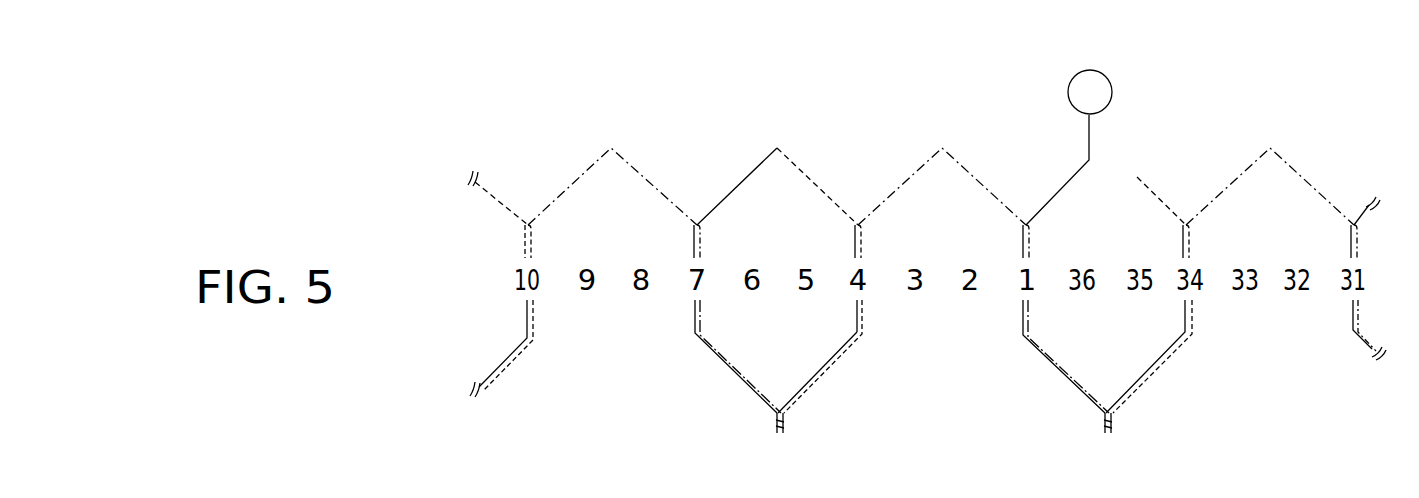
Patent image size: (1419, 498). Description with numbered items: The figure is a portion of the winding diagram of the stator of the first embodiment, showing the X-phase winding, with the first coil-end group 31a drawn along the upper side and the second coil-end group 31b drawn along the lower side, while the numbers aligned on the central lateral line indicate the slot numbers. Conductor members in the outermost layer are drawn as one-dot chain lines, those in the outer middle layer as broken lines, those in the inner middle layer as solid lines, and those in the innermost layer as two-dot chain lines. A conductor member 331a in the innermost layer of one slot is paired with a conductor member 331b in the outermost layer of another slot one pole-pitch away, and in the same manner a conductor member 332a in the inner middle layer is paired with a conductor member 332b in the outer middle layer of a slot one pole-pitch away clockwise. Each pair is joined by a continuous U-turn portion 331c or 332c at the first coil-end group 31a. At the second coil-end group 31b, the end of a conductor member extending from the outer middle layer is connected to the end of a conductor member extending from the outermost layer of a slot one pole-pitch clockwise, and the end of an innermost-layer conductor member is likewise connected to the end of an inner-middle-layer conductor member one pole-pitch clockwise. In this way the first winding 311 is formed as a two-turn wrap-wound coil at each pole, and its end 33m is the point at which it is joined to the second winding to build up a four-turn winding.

The first coil-end group 31a is at (449, 148).
The second coil-end group 31b is at (447, 343).
The first winding 311 is at (1213, 117).
The end of first winding 33m is at (1157, 193).
The conductor member in the innermost layer 331a is at (857, 313).
The conductor member in the outermost layer 331b is at (700, 318).
The U-turn portion 331c is at (611, 149).
The conductor member in the inner middle layer 332a is at (695, 322).
The conductor member in the outer middle layer 332b is at (862, 320).
The U-turn portion 332c is at (777, 149).